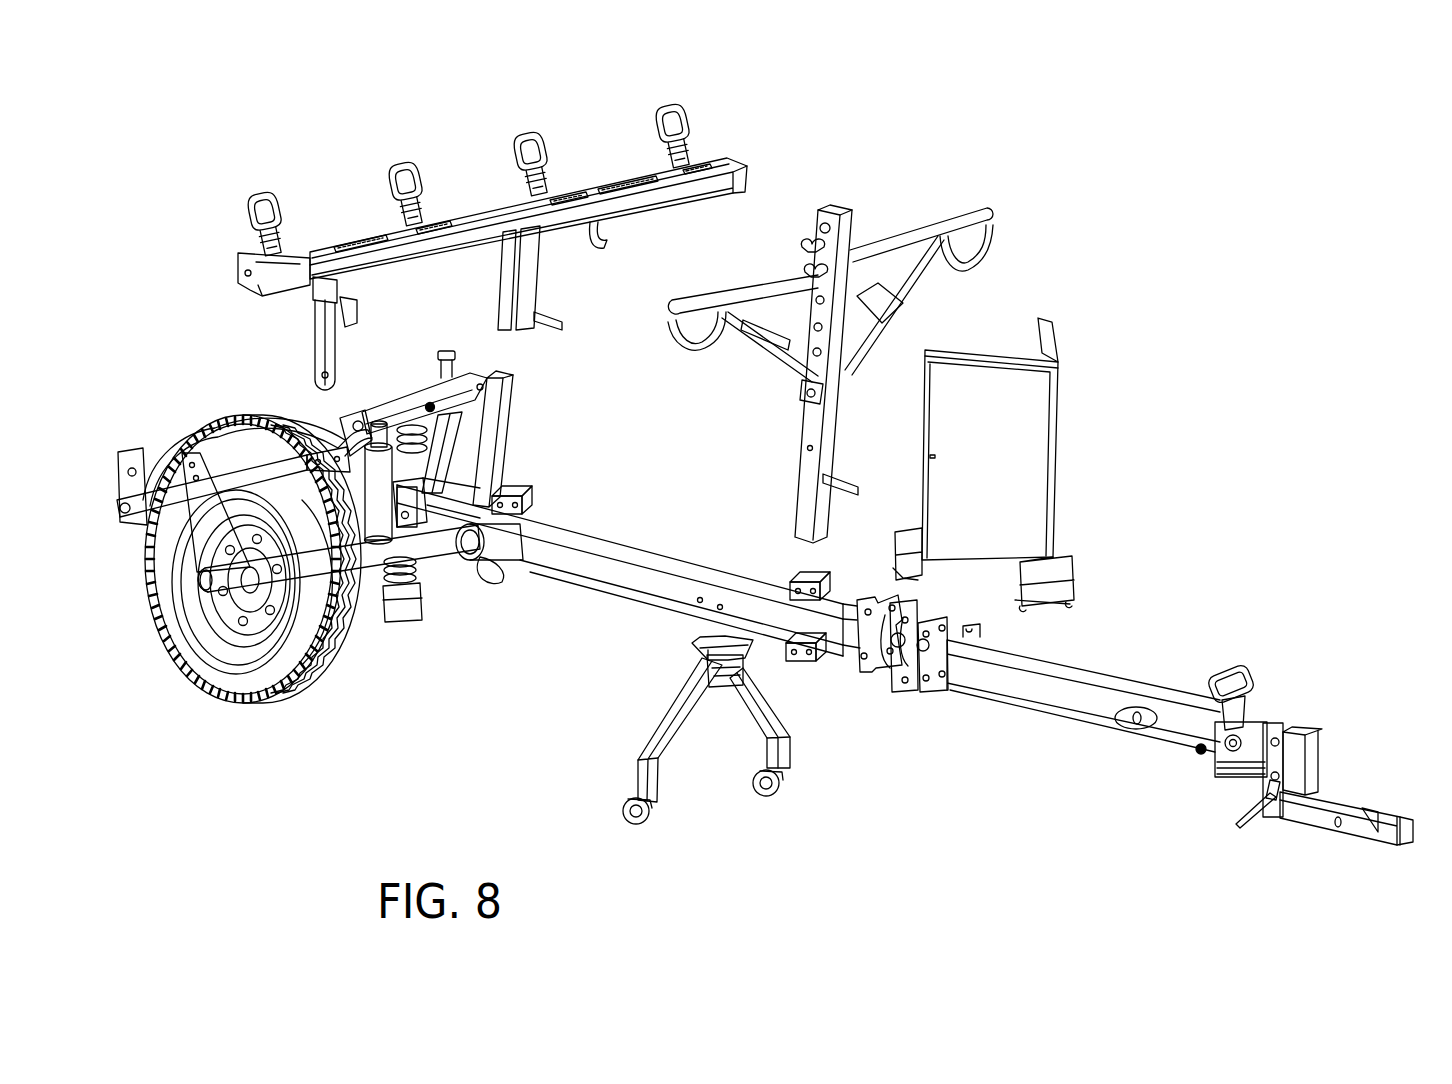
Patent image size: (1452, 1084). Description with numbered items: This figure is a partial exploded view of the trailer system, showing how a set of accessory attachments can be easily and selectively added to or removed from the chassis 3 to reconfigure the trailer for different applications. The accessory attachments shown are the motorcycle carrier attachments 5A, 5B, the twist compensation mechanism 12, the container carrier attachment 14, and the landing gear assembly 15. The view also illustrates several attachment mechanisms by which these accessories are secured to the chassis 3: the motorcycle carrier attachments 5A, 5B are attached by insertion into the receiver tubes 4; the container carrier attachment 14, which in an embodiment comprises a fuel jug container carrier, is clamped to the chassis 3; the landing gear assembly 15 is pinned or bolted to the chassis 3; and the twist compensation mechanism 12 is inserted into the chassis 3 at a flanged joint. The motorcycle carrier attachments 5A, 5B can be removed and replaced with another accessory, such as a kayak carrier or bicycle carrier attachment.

The chassis 3 is at (412, 768).
The receiver tubes 4 is at (522, 488).
The motorcycle carrier attachment 5A is at (755, 149).
The motorcycle carrier attachment 5B is at (1021, 200).
The twist compensation mechanism 12 is at (905, 703).
The container carrier attachment 14 is at (1090, 440).
The landing gear assembly 15 is at (765, 806).